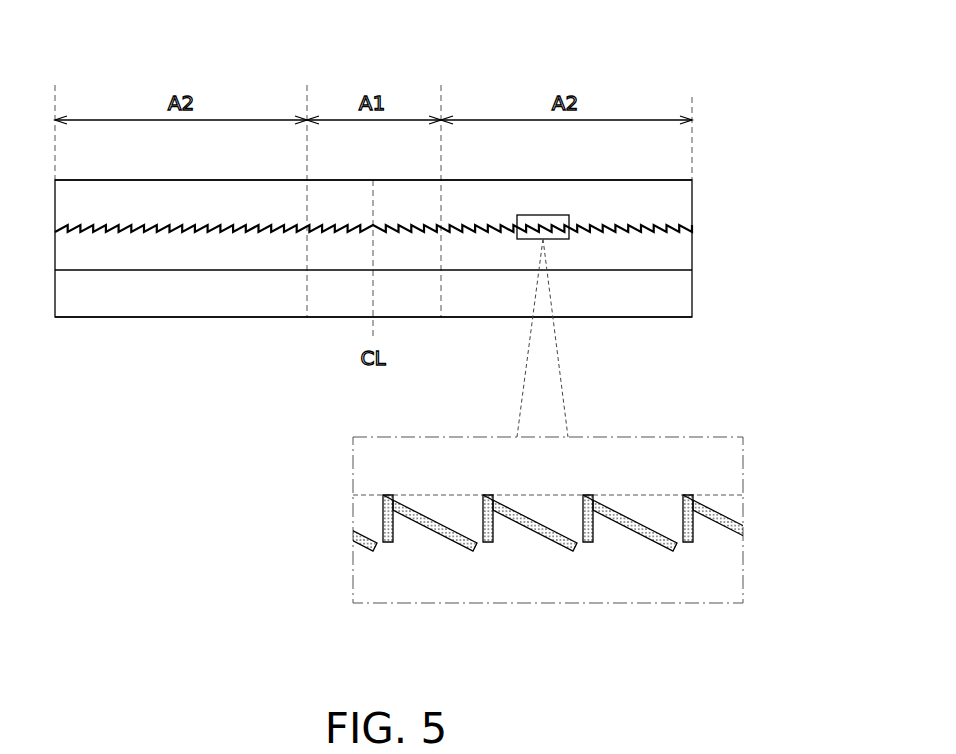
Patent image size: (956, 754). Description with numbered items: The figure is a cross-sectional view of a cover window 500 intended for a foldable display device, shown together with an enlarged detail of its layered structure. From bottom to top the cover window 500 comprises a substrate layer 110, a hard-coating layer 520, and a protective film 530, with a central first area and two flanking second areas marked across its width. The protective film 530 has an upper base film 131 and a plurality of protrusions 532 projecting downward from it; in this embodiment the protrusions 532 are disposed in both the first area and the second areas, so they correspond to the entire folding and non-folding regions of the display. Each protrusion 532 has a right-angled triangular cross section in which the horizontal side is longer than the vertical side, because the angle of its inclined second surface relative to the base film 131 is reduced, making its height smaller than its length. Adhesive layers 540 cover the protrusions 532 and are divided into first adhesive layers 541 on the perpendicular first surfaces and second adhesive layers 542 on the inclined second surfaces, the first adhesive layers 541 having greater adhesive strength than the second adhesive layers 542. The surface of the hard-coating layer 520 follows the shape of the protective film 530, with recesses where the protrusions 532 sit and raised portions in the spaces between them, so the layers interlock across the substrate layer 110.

The cover window 500 is at (636, 42).
The protective film 530 is at (675, 200).
The protrusions 532 is at (556, 508).
The base film 131 is at (708, 460).
The adhesive layers 540 is at (688, 225).
The first adhesive layers 541 is at (686, 542).
The second adhesive layers 542 is at (652, 540).
The hard-coating layer 520 is at (675, 250).
The substrate layer 110 is at (675, 297).